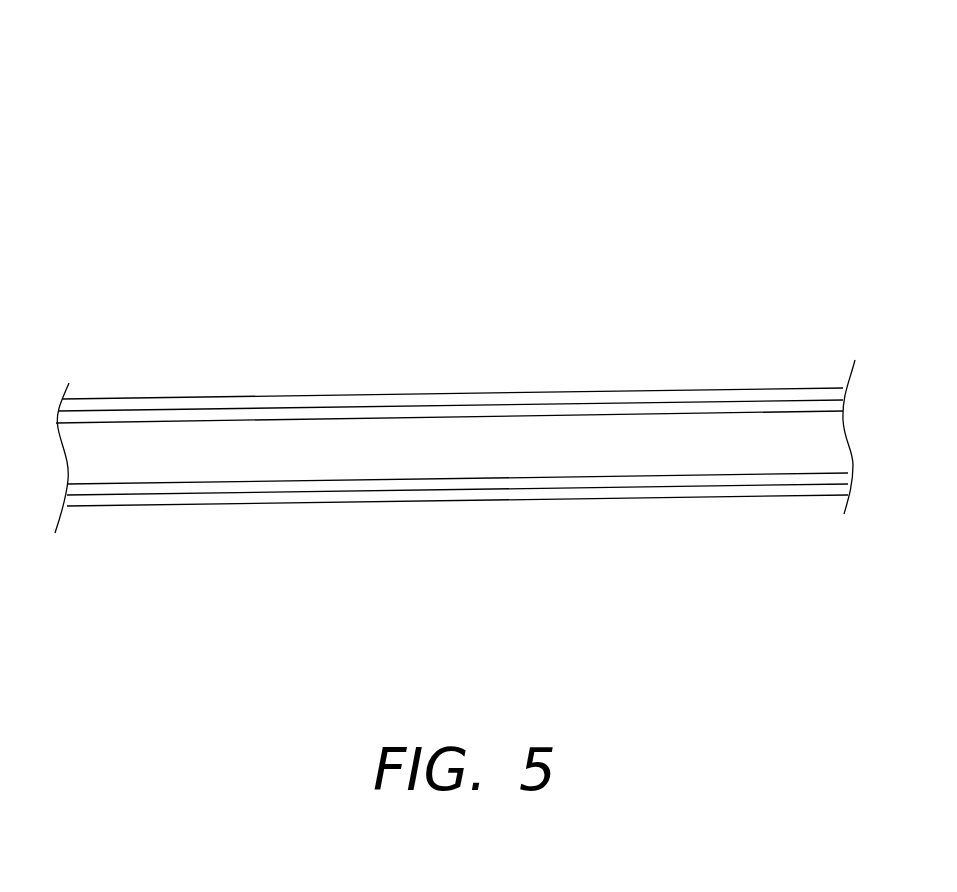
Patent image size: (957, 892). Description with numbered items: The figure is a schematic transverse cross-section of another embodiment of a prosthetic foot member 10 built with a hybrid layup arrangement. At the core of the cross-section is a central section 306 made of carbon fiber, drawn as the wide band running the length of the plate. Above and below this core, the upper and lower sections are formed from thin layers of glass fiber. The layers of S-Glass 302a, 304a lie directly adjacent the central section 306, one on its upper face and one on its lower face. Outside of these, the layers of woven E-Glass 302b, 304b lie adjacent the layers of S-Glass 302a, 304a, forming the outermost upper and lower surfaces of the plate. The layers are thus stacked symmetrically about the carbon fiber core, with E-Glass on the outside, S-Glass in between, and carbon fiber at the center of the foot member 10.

The prosthetic foot member 10 is at (696, 82).
The layer of S-Glass 302a is at (938, 357).
The layer of woven E-Glass 302b is at (799, 389).
The layer of S-Glass 304a is at (938, 464).
The layer of woven E-Glass 304b is at (763, 493).
The central section 306 is at (799, 433).